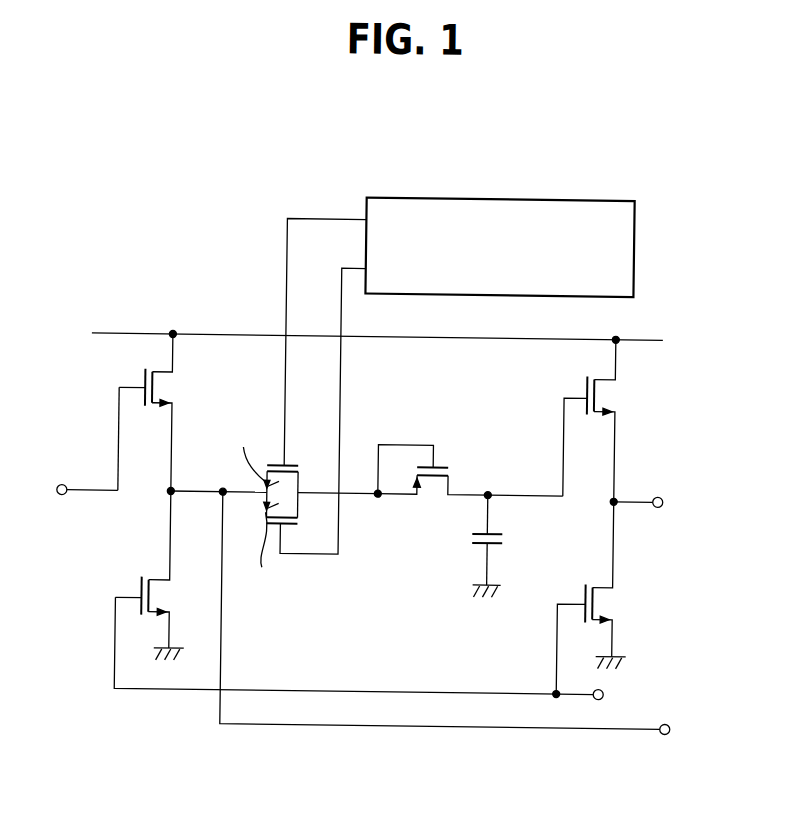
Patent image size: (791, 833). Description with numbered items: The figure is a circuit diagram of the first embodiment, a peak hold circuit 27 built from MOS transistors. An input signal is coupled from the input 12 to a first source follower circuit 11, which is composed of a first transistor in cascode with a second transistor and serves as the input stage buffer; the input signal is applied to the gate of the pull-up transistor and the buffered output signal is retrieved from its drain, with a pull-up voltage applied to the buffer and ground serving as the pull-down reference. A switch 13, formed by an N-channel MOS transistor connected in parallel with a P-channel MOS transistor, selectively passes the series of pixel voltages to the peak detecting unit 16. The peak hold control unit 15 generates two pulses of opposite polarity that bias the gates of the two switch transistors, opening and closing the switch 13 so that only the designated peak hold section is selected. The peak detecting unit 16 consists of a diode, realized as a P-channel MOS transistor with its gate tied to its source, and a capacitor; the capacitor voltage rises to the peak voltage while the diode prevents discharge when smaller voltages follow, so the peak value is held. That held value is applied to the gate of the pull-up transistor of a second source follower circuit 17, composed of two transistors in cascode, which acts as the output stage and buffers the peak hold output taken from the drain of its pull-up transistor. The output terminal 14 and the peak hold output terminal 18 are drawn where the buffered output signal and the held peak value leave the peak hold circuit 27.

The source follower circuit 11 is at (80, 653).
The input 12 is at (62, 489).
The switch 13 is at (358, 431).
The output terminal (Vout) 14 is at (668, 732).
The peak hold control unit 15 is at (580, 199).
The peak detecting unit 16 is at (402, 569).
The source follower circuit 17 is at (674, 398).
The peak hold output terminal (PHout) 18 is at (660, 505).
The peak hold circuit 27 is at (394, 803).